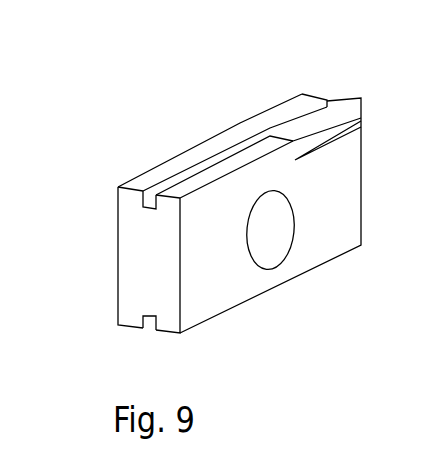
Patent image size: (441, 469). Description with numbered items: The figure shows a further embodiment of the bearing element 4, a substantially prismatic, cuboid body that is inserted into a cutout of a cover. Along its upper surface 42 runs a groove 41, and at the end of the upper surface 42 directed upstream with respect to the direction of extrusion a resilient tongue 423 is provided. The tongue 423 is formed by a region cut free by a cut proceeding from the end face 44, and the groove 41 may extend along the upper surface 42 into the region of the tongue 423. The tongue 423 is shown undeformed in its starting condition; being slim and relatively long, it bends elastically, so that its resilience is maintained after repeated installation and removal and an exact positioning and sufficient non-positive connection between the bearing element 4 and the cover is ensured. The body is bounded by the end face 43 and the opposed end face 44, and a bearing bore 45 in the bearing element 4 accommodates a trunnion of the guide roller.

The bearing element 4 is at (197, 124).
The groove 41 is at (150, 200).
The upper surface 42 is at (231, 138).
The resilient tongue 423 is at (334, 82).
The end face 43 is at (133, 250).
The end face 44 is at (365, 193).
The bearing bore 45 is at (275, 247).